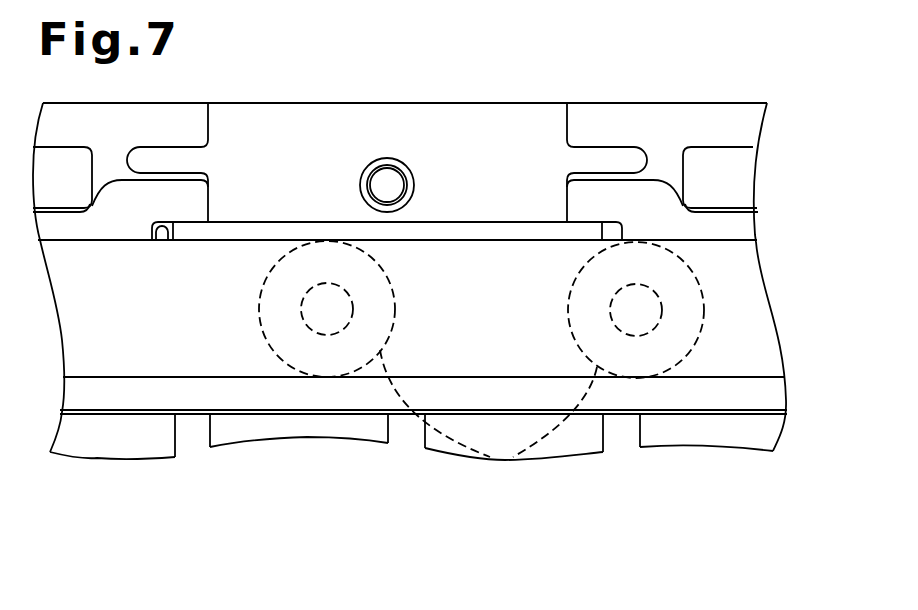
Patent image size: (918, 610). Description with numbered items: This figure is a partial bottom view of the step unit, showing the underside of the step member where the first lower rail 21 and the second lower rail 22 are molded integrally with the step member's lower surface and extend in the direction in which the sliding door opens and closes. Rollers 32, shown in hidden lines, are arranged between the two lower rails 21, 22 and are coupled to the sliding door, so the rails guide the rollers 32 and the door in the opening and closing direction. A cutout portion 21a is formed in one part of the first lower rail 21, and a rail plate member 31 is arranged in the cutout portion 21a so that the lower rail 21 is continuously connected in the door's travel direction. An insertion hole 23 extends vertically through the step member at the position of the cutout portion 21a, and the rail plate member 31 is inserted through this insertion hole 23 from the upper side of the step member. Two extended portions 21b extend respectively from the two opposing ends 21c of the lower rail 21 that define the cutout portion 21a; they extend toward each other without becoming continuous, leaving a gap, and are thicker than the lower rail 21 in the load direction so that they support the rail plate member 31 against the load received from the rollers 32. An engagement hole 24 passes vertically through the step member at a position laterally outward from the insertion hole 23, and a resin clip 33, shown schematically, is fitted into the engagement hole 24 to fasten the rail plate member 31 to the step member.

The first lower rail 21 is at (737, 216).
The cutout portion 21a is at (160, 237).
The extended portions 21b is at (178, 188).
The opposing ends 21c is at (117, 227).
The second lower rail 22 is at (767, 387).
The insertion hole 23 is at (243, 232).
The engagement hole 24 is at (383, 160).
The rail plate member 31 is at (450, 236).
The rollers 32 is at (513, 457).
The resin clip 33 is at (397, 182).